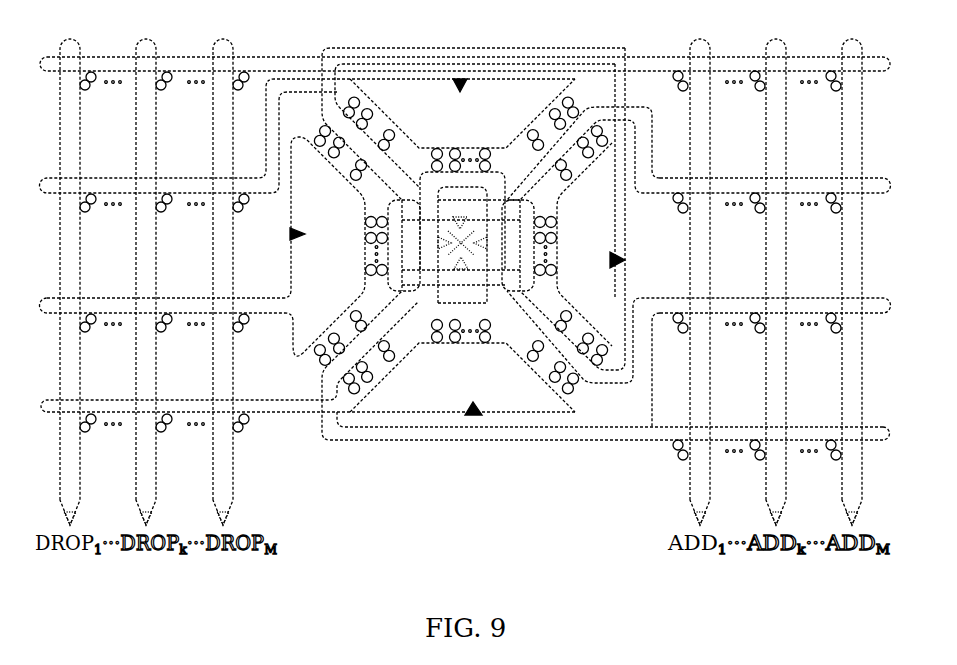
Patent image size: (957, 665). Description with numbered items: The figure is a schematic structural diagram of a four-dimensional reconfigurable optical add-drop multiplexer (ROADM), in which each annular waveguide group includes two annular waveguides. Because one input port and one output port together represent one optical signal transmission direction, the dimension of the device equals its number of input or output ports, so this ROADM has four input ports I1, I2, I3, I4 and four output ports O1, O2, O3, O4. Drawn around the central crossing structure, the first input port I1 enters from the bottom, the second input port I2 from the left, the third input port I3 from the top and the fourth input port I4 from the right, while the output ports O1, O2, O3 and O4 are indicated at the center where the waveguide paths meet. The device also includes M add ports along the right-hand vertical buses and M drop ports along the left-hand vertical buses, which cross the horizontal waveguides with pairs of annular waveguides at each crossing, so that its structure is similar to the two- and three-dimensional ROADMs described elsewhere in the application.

The input port I1 is at (479, 401).
The input port I2 is at (302, 249).
The input port I3 is at (453, 93).
The input port I4 is at (616, 251).
The output port O1 is at (460, 217).
The output port O2 is at (490, 246).
The output port O3 is at (458, 274).
The output port O4 is at (436, 249).